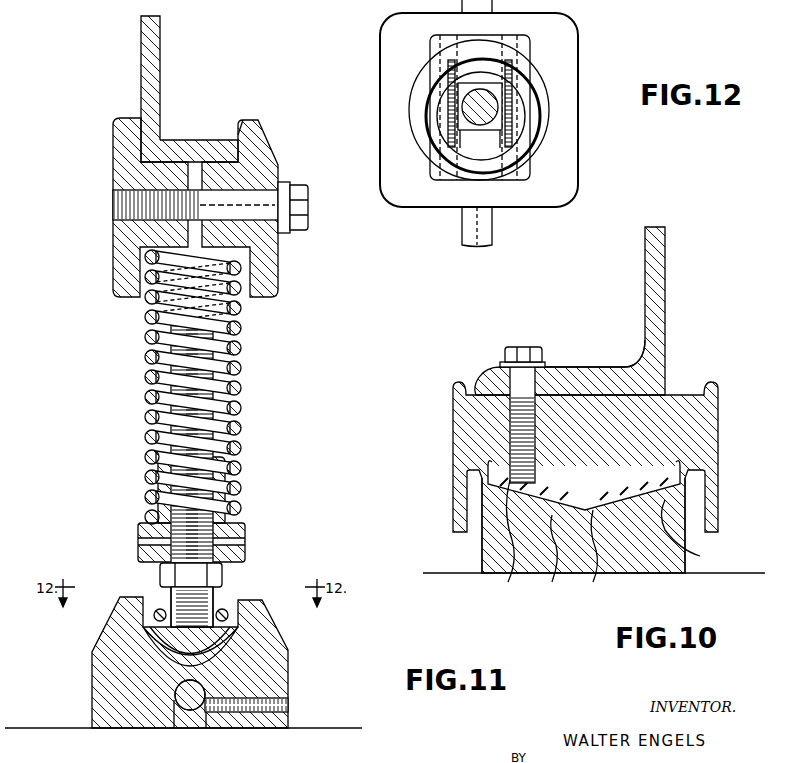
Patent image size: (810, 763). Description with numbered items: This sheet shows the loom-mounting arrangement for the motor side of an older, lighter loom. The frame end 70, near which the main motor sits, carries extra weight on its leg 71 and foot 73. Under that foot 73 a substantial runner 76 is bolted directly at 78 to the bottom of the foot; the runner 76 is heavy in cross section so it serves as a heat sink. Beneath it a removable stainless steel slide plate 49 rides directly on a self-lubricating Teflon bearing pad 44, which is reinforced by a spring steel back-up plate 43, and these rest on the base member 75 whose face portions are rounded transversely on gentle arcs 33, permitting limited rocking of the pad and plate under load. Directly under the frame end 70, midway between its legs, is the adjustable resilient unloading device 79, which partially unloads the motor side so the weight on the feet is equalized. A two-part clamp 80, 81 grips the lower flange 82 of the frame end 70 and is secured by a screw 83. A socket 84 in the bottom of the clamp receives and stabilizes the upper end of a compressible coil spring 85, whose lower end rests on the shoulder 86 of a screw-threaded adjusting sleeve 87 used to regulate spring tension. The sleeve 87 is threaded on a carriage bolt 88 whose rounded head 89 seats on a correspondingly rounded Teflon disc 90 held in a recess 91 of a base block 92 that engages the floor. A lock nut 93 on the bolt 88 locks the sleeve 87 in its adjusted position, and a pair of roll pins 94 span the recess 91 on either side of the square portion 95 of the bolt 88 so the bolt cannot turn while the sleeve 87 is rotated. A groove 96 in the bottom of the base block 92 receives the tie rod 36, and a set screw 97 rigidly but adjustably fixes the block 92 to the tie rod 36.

In FIG. 11, the frame end 70 is at (141, 71).
In FIG. 11, the lower flange 82 is at (191, 150).
In FIG. 11, the clamp part 80 is at (128, 172).
In FIG. 11, the clamp part 81 is at (248, 176).
In FIG. 11, the screw 83 is at (258, 205).
In FIG. 11, the socket 84 is at (142, 272).
In FIG. 11, the adjustable resilient unloading device 79 is at (192, 387).
In FIG. 11, the compressible coil spring 85 is at (240, 412).
In FIG. 11, the screw-threaded adjusting sleeve 87 is at (220, 482).
In FIG. 11, the shoulder 86 is at (240, 523).
In FIG. 11, the screw-threaded bolt 88 is at (177, 412).
In FIG. 12, the screw-threaded bolt 88 is at (464, 105).
In FIG. 11, the lock nut 93 is at (214, 575).
In FIG. 11, the roll pins 94 is at (202, 612).
In FIG. 12, the roll pins 94 is at (449, 122).
In FIG. 11, the recess 91 is at (150, 620).
In FIG. 12, the recess 91 is at (545, 130).
In FIG. 11, the rounded head 89 is at (235, 652).
In FIG. 12, the rounded head 89 is at (487, 152).
In FIG. 11, the rounded disc 90 is at (258, 668).
In FIG. 12, the rounded disc 90 is at (436, 86).
In FIG. 11, the base block 92 is at (102, 693).
In FIG. 12, the base block 92 is at (565, 165).
In FIG. 11, the square portion 95 is at (184, 622).
In FIG. 12, the square portion 95 is at (465, 143).
In FIG. 11, the groove 96 is at (186, 715).
In FIG. 11, the tie rod 36 is at (197, 709).
In FIG. 12, the tie rod 36 is at (494, 230).
In FIG. 11, the set screw 97 is at (290, 705).
In FIG. 10, the leg 71 is at (660, 312).
In FIG. 10, the foot 73 is at (600, 367).
In FIG. 10, the bolt 78 is at (530, 357).
In FIG. 10, the runner 76 is at (685, 395).
In FIG. 10, the slide plate 49 is at (488, 468).
In FIG. 10, the bearing pad 44 is at (492, 480).
In FIG. 10, the base member 75 is at (482, 557).
In FIG. 10, the back-up plate 43 is at (630, 551).
In FIG. 10, the arcuate face 33 is at (553, 541).